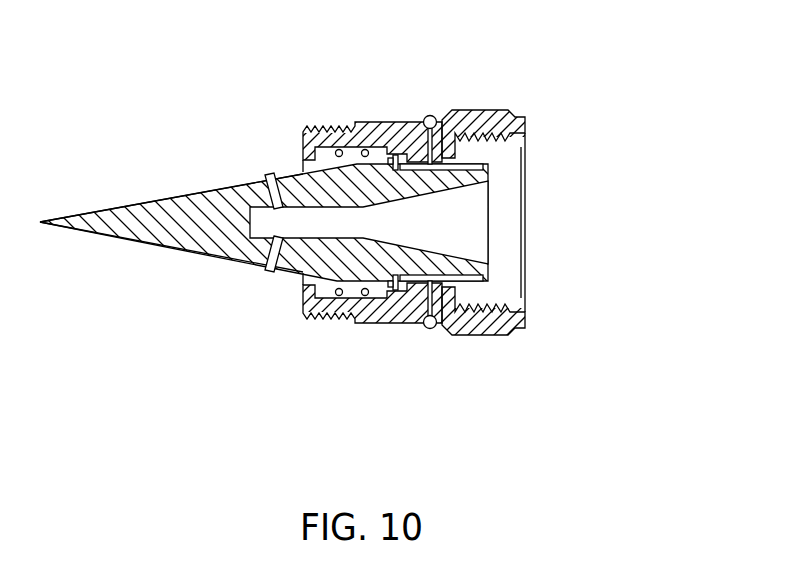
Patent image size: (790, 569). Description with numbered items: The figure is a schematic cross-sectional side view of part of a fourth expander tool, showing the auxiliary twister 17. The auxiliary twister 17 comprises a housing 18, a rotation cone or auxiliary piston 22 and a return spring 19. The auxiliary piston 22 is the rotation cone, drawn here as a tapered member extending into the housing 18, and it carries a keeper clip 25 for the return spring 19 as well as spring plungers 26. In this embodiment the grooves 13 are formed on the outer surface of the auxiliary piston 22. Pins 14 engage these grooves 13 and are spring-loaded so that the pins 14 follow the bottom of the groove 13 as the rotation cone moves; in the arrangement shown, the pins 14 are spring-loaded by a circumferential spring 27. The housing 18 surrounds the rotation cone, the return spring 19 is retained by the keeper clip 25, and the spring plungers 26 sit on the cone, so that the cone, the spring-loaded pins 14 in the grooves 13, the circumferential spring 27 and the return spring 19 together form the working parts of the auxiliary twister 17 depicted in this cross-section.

The grooves 13 is at (462, 162).
The pins 14 is at (425, 290).
The auxiliary twister 17 is at (466, 78).
The housing 18 is at (510, 332).
The return spring 19 is at (360, 123).
The auxiliary piston 22 is at (167, 215).
The keeper clip 25 is at (427, 116).
The spring plungers 26 is at (271, 177).
The circumferential spring 27 is at (430, 329).